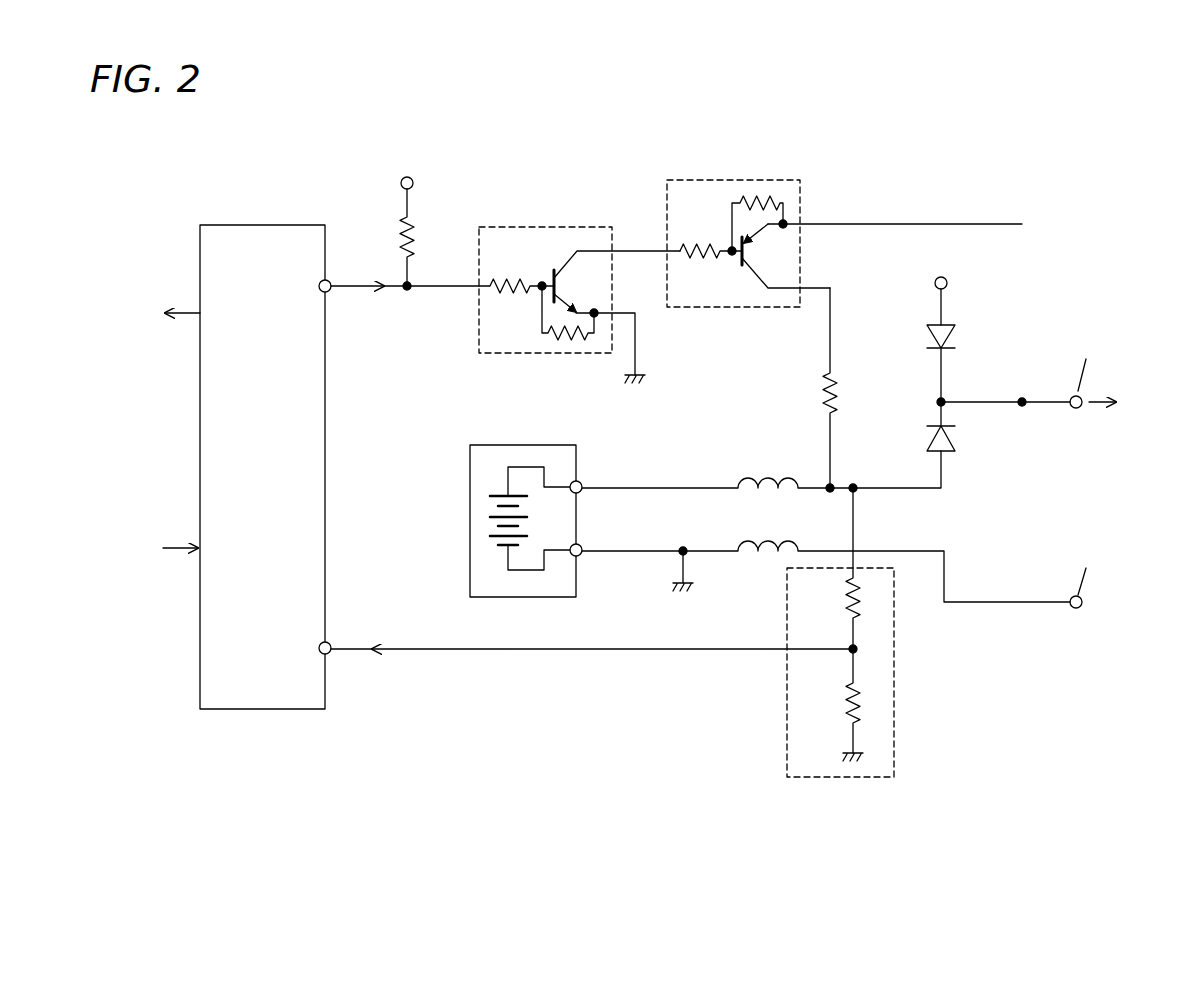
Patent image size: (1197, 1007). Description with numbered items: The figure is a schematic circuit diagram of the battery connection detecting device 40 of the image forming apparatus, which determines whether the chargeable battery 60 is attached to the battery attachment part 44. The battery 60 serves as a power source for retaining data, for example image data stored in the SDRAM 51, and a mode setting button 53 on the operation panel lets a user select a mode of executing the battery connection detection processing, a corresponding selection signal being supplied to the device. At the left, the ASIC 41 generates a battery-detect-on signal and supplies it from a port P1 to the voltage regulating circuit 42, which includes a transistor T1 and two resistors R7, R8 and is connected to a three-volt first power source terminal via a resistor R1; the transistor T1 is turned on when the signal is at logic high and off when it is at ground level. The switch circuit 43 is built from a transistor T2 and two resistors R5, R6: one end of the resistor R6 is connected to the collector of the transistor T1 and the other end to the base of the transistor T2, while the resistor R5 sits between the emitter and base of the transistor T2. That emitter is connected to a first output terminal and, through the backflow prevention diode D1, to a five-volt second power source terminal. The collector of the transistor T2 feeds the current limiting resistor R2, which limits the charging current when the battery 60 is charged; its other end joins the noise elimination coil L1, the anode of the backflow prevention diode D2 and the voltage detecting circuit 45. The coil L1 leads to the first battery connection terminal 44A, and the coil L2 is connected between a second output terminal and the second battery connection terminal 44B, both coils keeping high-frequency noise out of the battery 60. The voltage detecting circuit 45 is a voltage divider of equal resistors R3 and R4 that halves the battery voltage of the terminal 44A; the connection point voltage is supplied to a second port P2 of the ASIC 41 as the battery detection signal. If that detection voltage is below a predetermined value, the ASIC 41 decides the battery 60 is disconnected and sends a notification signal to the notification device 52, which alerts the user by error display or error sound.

The battery connection detecting device 40 is at (836, 157).
The ASIC 41 is at (281, 224).
The voltage regulating circuit 42 is at (519, 227).
The switch circuit 43 is at (716, 180).
The battery attachment part 44 is at (470, 563).
The first battery connection terminal 44A is at (582, 482).
The second battery connection terminal 44B is at (582, 556).
The voltage detecting circuit 45 is at (895, 674).
The battery 60 is at (500, 492).
The SDRAM 51 is at (1056, 384).
The notification device 52 is at (118, 327).
The mode setting button 53 is at (139, 587).
The resistor R1 is at (415, 244).
The current limiting resistor R2 is at (835, 400).
The resistor R3 is at (845, 596).
The resistor R4 is at (845, 699).
The resistor R5 is at (762, 198).
The resistor R6 is at (690, 245).
The resistor R7 is at (568, 342).
The resistor R8 is at (508, 280).
The transistor T1 is at (561, 270).
The transistor T2 is at (752, 268).
The diode D1 is at (934, 324).
The diode D2 is at (934, 451).
The coil L1 is at (765, 478).
The coil L2 is at (790, 545).
The port P1 is at (330, 281).
The second port P2 is at (330, 643).